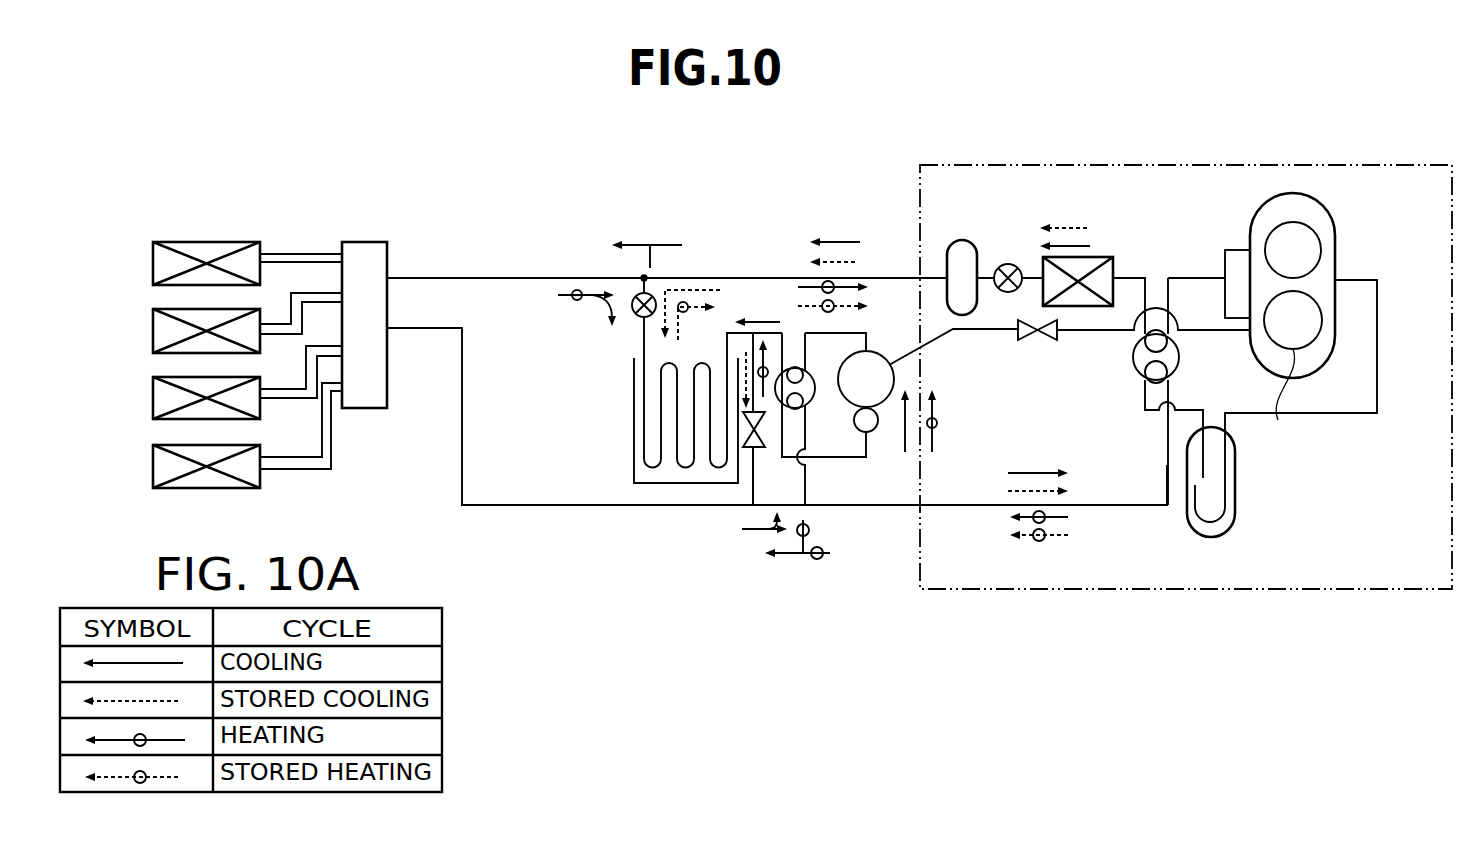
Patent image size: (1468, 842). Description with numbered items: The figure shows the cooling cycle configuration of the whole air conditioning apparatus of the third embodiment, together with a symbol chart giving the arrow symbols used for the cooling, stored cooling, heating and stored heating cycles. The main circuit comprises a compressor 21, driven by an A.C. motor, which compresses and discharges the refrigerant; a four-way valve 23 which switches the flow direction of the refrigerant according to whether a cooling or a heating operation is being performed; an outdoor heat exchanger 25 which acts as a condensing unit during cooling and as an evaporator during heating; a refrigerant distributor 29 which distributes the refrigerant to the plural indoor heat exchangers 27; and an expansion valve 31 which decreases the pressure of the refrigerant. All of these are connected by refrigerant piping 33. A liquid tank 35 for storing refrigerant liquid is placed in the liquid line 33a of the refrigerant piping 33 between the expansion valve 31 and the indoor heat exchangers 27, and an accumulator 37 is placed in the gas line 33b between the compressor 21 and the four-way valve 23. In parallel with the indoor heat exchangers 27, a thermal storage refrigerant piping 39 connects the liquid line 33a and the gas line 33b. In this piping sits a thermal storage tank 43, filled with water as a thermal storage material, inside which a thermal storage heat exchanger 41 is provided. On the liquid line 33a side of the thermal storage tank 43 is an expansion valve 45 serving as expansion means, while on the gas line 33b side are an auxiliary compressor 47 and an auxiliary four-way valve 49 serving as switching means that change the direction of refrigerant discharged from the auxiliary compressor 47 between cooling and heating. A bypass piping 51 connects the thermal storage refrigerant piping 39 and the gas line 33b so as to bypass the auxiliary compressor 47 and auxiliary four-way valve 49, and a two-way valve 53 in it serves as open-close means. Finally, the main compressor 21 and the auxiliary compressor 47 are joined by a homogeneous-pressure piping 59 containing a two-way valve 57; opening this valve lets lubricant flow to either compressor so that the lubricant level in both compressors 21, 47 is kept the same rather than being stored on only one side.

The compressor 21 is at (1328, 206).
The 4-way valve 23 is at (1142, 377).
The outdoor heat exchanger 25 is at (1113, 267).
The indoor heat exchanger 27 is at (153, 462).
The refrigerant distributor 29 is at (362, 242).
The expansion valve 31 is at (1010, 264).
The refrigerant piping 33 is at (542, 507).
The liquid line 33a is at (462, 278).
The gas line 33b is at (482, 507).
The liquid tank 35 is at (962, 240).
The accumulator 37 is at (1227, 533).
The thermal storage refrigerant piping 39 is at (642, 333).
The thermal storage heat exchanger 41 is at (701, 363).
The thermal storage tank 43 is at (633, 455).
The expansion valve 45 is at (640, 298).
The auxiliary compressor 47 is at (868, 351).
The auxiliary 4-way valve 49 is at (813, 408).
The bypass piping 51 is at (752, 486).
The 2-way valve 53 is at (746, 456).
The two-way valve 57 is at (1043, 340).
The homogeneous-pressure piping 59 is at (978, 330).